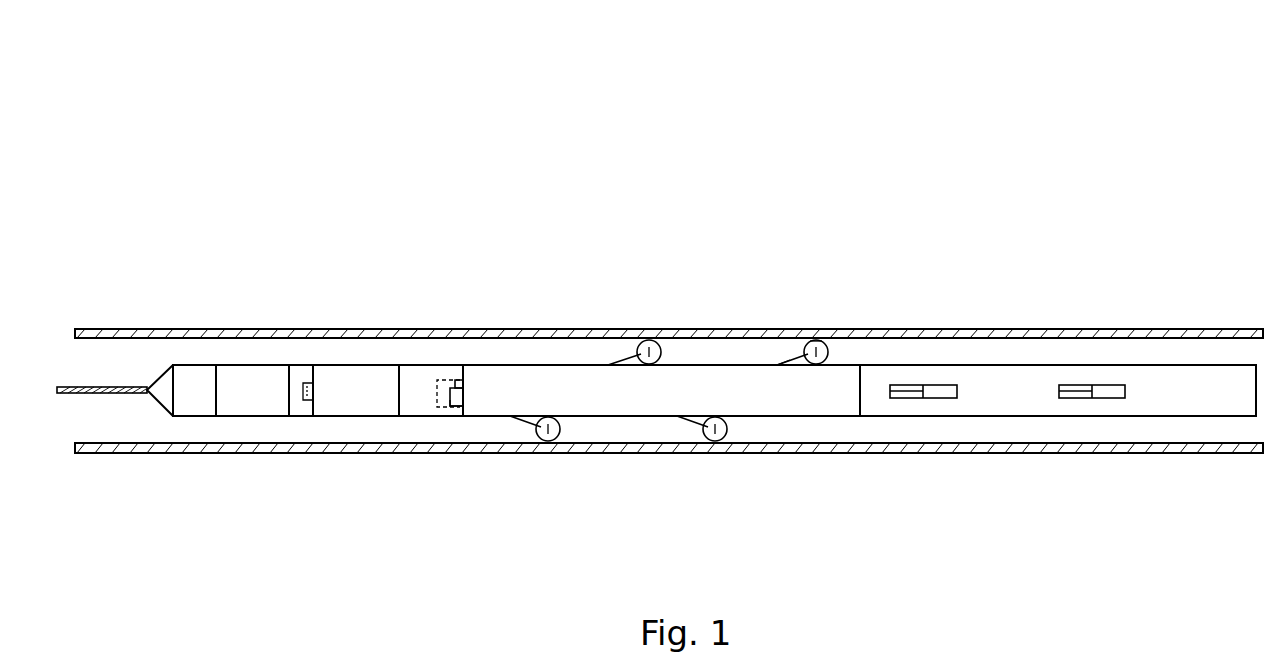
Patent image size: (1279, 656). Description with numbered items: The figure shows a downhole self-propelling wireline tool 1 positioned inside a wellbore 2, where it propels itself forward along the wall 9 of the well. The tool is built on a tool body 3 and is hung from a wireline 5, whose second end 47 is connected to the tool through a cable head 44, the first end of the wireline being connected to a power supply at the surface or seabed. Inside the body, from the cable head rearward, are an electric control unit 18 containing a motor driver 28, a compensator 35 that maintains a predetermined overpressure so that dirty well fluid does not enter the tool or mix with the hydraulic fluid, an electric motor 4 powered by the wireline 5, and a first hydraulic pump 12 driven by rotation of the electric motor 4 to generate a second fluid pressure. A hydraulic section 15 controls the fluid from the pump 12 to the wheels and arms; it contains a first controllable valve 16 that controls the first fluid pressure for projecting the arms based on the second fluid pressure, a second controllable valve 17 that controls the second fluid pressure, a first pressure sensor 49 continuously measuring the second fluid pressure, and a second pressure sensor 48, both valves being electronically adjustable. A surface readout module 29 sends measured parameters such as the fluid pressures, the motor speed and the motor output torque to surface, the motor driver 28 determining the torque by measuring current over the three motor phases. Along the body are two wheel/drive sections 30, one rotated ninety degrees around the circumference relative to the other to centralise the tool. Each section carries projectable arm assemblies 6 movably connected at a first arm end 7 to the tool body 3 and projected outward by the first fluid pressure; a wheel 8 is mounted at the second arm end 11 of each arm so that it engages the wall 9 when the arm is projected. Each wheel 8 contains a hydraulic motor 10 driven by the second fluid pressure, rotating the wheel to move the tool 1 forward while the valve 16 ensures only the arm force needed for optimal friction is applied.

The downhole self-propelling wireline tool 1 is at (1212, 123).
The wellbore 2 is at (1228, 342).
The tool body 3 is at (530, 372).
The electric motor 4 is at (277, 372).
The wireline 5 is at (92, 387).
The projectable arm assemblies 6 is at (616, 362).
The first arm end 7 is at (770, 365).
The wheels 8 is at (646, 343).
The wall 9 is at (1181, 341).
The hydraulic motor 10 is at (652, 352).
The second arm end 11 is at (806, 341).
The first hydraulic pump 12 is at (343, 376).
The hydraulic section 15 is at (428, 382).
The first controllable valve 16 is at (455, 378).
The second controllable valve 17 is at (453, 408).
The electric control unit 18 is at (193, 383).
The motor driver 28 is at (302, 401).
The surface readout module 29 is at (436, 406).
The wheel/drive section 30 is at (828, 407).
The compensator 35 is at (238, 382).
The cable head 44 is at (158, 374).
The second end 47 is at (167, 372).
The second pressure sensor 48 is at (464, 378).
The first pressure sensor 49 is at (457, 409).